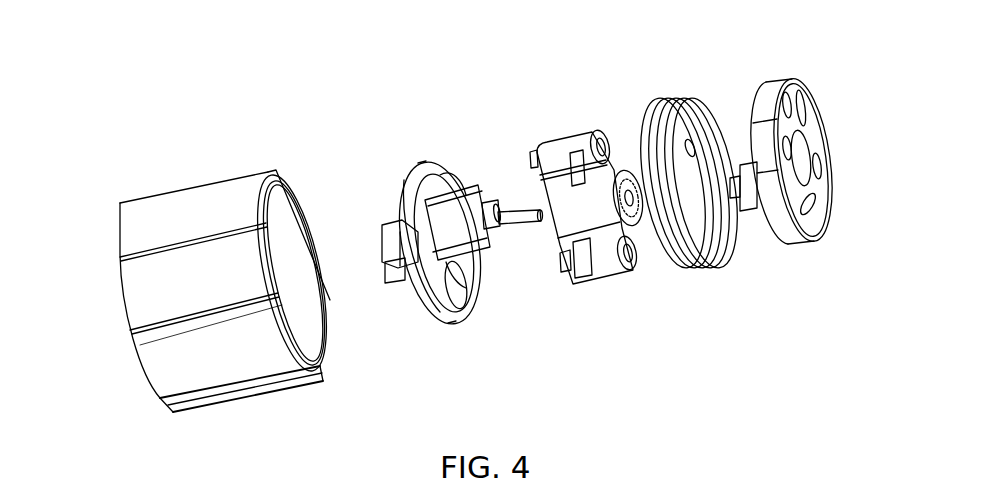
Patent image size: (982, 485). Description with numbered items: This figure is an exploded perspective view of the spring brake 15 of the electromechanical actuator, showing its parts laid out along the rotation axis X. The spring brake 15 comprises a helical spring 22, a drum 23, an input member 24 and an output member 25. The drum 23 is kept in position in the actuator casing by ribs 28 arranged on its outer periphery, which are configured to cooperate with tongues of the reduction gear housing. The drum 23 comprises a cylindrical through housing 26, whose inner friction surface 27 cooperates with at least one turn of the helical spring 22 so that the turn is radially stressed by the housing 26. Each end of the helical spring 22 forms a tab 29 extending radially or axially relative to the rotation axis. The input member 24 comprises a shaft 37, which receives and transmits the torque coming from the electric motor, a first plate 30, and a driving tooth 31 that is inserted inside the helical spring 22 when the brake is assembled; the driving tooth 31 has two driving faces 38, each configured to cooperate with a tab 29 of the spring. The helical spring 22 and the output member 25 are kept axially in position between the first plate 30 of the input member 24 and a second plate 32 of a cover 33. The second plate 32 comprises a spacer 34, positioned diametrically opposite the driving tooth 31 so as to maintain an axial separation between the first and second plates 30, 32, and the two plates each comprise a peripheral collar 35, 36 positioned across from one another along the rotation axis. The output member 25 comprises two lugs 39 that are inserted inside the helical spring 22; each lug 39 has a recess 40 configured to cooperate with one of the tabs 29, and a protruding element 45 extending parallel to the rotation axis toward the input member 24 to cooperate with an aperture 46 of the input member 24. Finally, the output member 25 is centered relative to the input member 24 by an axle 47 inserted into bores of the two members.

The spring brake 15 is at (224, 81).
The helical spring 22 is at (667, 112).
The drum 23 is at (145, 290).
The input member 24 is at (450, 318).
The output member 25 is at (607, 267).
The housing 26 is at (278, 217).
The inner friction surface 27 is at (288, 284).
The ribs 28 is at (155, 358).
The tab 29 is at (690, 143).
The first plate 30 is at (463, 270).
The driving tooth 31 is at (463, 203).
The second plate 32 is at (797, 97).
The cover 33 is at (795, 236).
The spacer 34 is at (753, 194).
The peripheral collar 35 is at (420, 165).
The peripheral collar 36 is at (764, 98).
The shaft 37 is at (397, 243).
The driving face 38 is at (483, 197).
The lugs 39 is at (600, 140).
The recess 40 is at (583, 160).
The protruding element 45 is at (533, 157).
The aperture 46 is at (433, 187).
The axle 47 is at (520, 220).